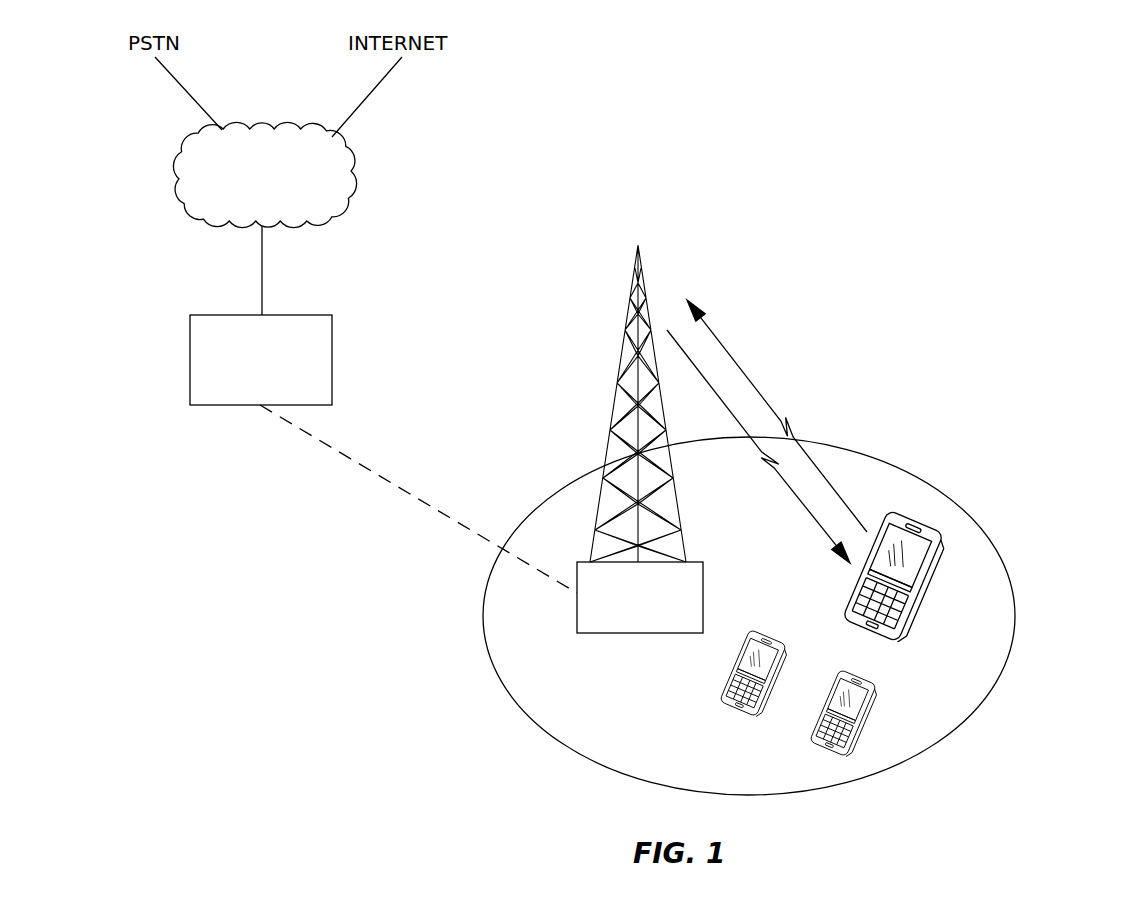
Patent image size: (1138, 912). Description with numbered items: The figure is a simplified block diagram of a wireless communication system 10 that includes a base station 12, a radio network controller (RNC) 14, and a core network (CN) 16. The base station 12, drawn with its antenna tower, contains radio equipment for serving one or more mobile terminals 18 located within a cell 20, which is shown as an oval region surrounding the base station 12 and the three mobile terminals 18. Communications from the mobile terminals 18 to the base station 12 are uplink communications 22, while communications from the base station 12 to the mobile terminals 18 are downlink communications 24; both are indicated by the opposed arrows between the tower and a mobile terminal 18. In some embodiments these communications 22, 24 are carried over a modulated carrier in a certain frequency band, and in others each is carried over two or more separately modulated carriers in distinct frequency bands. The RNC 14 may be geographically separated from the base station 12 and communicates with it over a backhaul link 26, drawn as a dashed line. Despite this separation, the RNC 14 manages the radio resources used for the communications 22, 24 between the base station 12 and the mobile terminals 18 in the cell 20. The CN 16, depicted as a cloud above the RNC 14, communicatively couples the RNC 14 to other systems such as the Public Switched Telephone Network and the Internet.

The wireless communication system 10 is at (1013, 167).
The base station 12 is at (628, 625).
The radio network controller 14 is at (247, 383).
The core network 16 is at (251, 196).
The mobile terminals 18 is at (910, 603).
The cell 20 is at (898, 467).
The uplink communications 22 is at (750, 386).
The downlink communications 24 is at (800, 512).
The backhaul link 26 is at (410, 490).